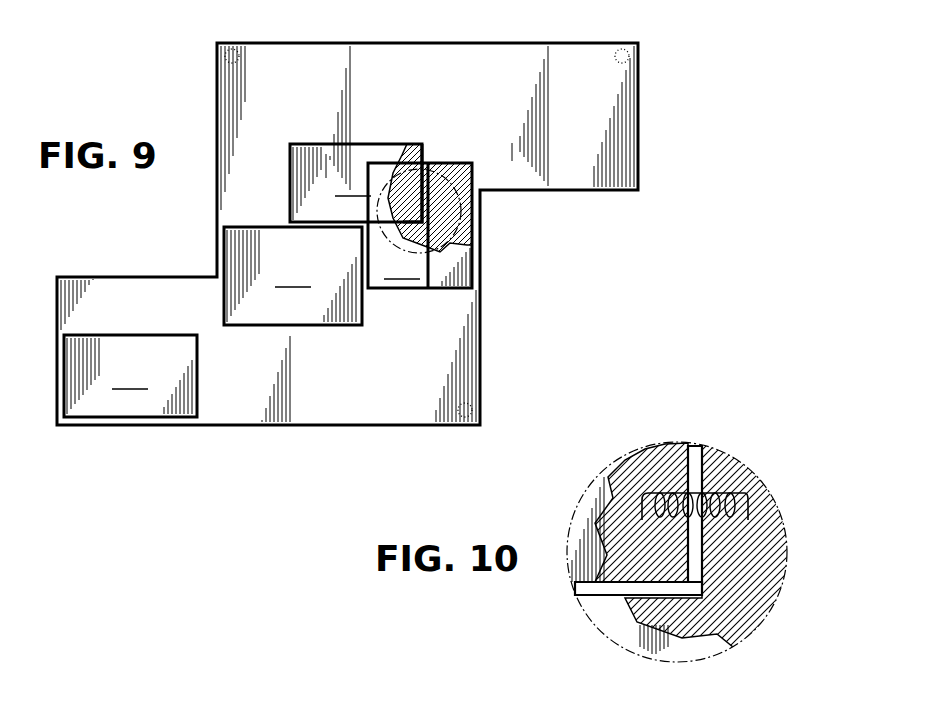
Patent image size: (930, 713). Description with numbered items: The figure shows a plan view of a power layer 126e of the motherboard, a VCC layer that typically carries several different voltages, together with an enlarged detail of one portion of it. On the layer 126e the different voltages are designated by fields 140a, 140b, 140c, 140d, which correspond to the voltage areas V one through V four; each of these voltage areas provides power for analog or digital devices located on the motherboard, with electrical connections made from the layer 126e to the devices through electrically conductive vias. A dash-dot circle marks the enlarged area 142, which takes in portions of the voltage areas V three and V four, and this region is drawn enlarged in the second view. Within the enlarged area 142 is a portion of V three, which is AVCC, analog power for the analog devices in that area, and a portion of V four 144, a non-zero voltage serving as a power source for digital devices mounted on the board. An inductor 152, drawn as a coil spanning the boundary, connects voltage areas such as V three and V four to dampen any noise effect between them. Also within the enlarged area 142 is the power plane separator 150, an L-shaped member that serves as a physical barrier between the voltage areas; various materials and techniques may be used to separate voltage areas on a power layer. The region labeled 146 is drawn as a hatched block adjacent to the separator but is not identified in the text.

In FIG. 9, the power layer P1 126e is at (257, 45).
In FIG. 9, the voltage field V1 140a is at (133, 405).
In FIG. 9, the voltage field V2 140b is at (313, 312).
In FIG. 9, the voltage field V3 140c is at (366, 145).
In FIG. 9, the voltage field V4 140d is at (463, 268).
In FIG. 9, the area 1 142 is at (438, 210).
In FIG. 10, the area 1 142 is at (687, 442).
In FIG. 10, the portion of V4 144 is at (771, 568).
In FIG. 10, the insert block 146 is at (600, 497).
In FIG. 10, the power plane separator 150 is at (582, 587).
In FIG. 10, the inductor 152 is at (722, 490).